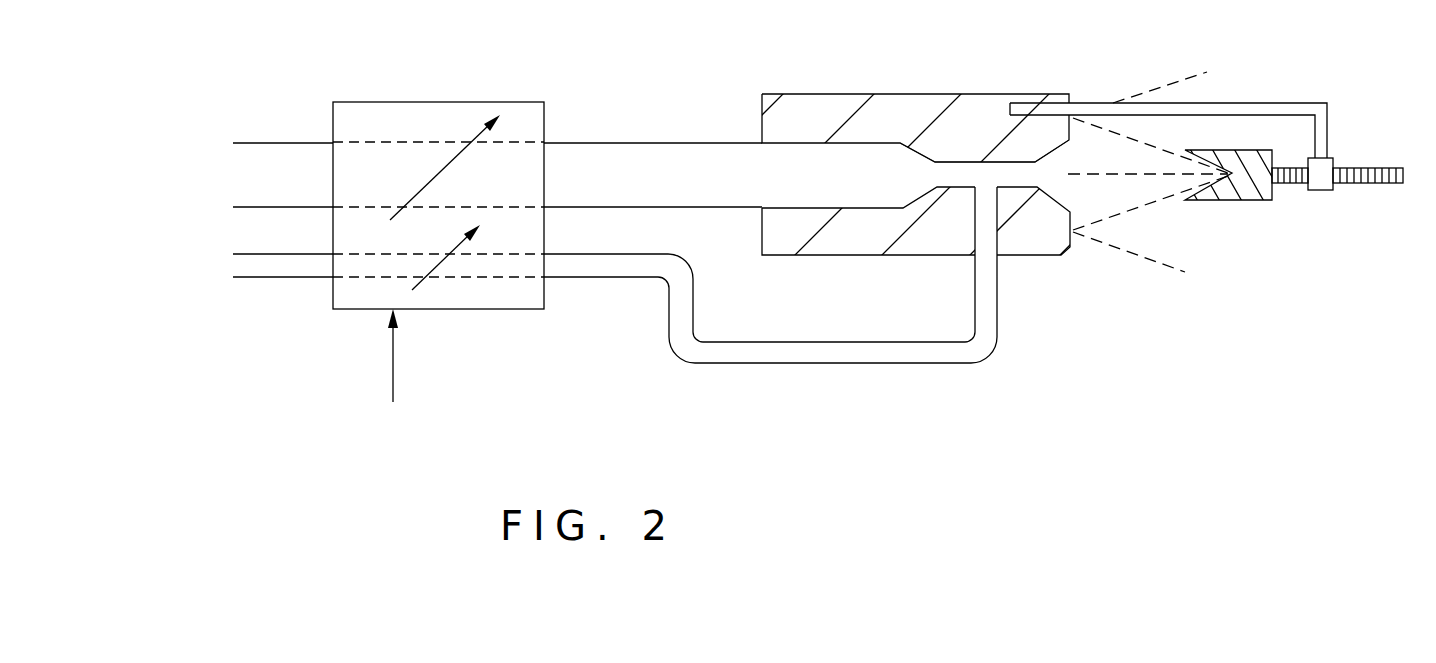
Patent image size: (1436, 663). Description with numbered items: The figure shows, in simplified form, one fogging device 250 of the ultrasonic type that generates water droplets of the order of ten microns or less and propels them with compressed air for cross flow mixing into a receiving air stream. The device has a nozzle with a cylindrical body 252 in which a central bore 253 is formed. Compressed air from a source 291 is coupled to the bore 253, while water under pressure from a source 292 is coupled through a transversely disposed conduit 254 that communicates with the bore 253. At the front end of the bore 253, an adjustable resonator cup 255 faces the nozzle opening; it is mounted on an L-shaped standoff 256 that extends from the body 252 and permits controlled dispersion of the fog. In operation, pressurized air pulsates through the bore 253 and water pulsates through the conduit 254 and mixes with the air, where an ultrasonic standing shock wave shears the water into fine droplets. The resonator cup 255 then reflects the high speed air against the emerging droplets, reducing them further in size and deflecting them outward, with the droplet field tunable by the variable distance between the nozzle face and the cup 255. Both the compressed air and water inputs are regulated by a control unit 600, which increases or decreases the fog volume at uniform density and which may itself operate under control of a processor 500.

The fogging device 250 is at (793, 132).
The cylindrical body 252 is at (882, 100).
The central bore 253 is at (915, 165).
The transversely disposed conduit 254 is at (987, 220).
The adjustable resonator cup 255 is at (1235, 197).
The L-shaped standoff 256 is at (1243, 103).
The control unit 600 is at (407, 112).
The compressed air source 291 is at (220, 173).
The water source 292 is at (220, 265).
The processor 500 is at (394, 395).